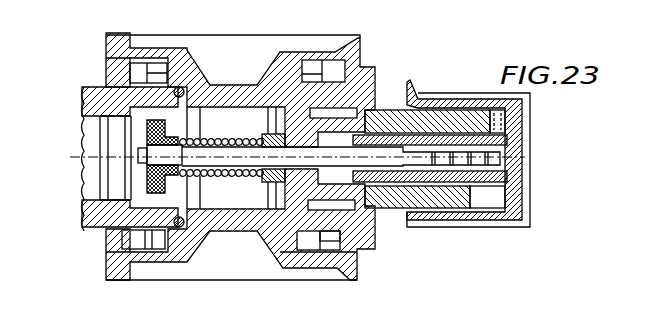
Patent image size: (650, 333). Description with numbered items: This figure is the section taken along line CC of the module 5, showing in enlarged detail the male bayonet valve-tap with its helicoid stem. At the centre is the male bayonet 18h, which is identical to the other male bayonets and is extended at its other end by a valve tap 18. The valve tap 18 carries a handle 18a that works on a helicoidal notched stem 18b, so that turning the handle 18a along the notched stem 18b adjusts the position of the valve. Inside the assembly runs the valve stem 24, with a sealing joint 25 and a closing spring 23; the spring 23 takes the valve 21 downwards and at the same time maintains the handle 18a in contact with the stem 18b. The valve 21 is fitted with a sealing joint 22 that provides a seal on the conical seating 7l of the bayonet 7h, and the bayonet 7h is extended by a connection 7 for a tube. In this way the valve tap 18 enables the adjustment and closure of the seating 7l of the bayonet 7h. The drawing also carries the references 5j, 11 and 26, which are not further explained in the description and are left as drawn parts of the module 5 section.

The module 5 is at (347, 276).
The outer sleeve of housing 5j is at (236, 165).
The connection 7 is at (82, 100).
The bayonet 7h is at (149, 260).
The conical seating 7l is at (132, 115).
The locking elements 11 is at (150, 250).
The valve tap 18 is at (445, 58).
The handle 18a is at (450, 216).
The helicoidal notched stem 18b is at (485, 208).
The male bayonet 18h is at (312, 252).
The valve 21 is at (147, 178).
The sealing joint 22 is at (82, 226).
The closing spring 23 is at (222, 170).
The valve stem 24 is at (355, 183).
The sealing joint 25 is at (340, 150).
The spring collar 26 is at (268, 183).